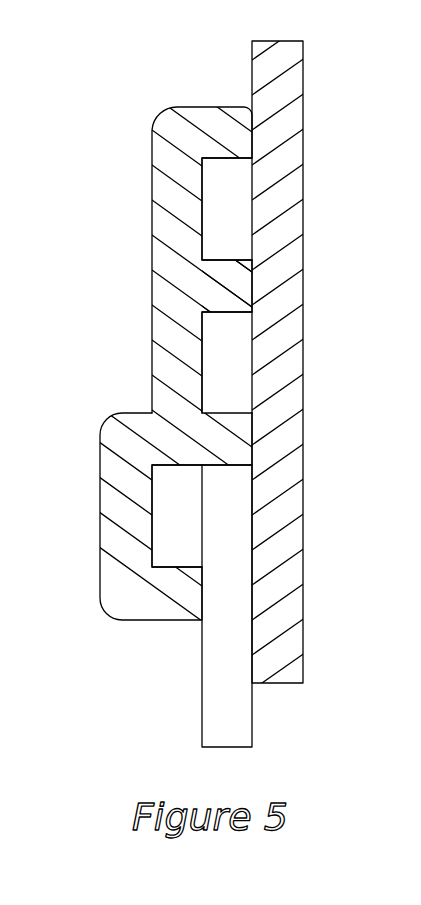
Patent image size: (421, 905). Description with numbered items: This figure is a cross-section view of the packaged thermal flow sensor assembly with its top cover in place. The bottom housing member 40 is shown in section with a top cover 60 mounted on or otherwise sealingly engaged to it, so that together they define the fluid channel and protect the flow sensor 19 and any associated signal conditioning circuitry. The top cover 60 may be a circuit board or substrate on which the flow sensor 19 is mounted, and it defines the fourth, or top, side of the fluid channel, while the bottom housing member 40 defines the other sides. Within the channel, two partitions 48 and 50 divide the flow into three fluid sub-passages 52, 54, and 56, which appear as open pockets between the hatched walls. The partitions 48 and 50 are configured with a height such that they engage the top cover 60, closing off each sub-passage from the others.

The flow sensor 19 is at (215, 672).
The bottom housing member 40 is at (168, 121).
The partition 48 is at (223, 288).
The partition 50 is at (223, 442).
The fluid sub-passage 52 is at (217, 213).
The fluid sub-passage 54 is at (217, 367).
The fluid sub-passage 56 is at (165, 518).
The top cover 60 is at (293, 358).